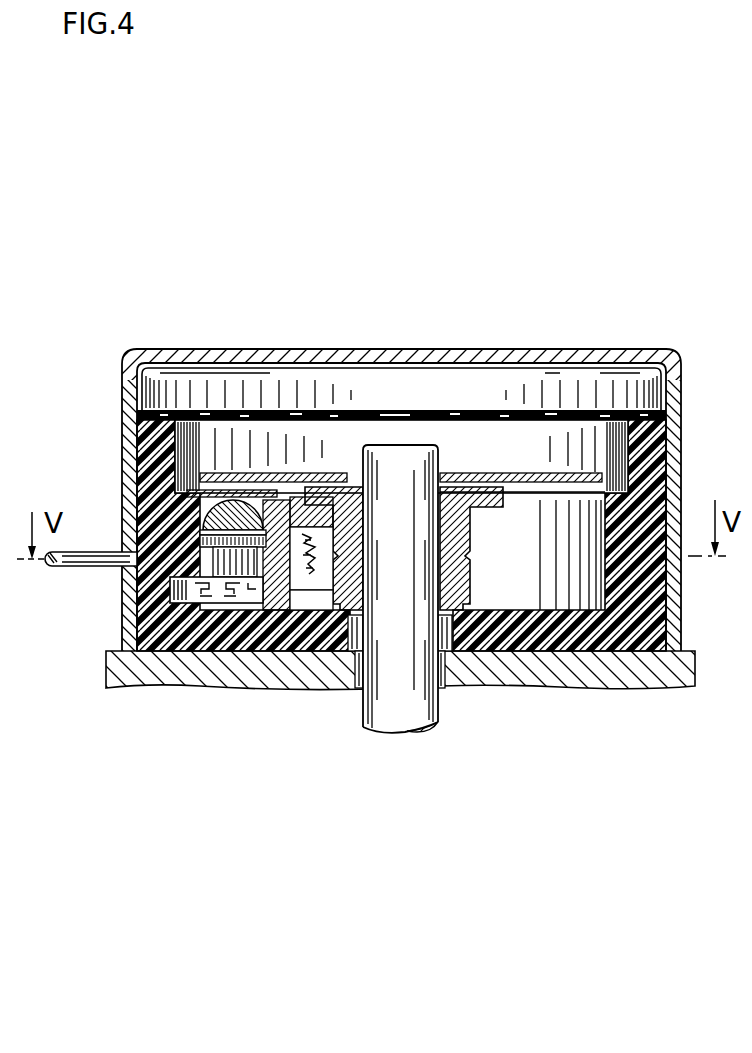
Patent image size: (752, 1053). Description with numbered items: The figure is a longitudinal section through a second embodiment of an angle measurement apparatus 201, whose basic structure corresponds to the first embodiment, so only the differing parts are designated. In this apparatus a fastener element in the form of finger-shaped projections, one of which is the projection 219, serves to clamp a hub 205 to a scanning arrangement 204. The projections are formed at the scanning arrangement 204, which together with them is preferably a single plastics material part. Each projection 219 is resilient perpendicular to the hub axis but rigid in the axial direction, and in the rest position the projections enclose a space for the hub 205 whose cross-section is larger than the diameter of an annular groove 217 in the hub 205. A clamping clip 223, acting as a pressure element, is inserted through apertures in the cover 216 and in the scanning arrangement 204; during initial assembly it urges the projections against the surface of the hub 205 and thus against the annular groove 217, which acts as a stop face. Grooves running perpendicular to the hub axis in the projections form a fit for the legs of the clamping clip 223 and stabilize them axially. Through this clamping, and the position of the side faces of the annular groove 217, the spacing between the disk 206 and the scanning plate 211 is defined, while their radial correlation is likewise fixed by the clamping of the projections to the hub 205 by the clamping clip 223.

The angle measurement apparatus 201 is at (432, 384).
The scanning arrangement 204 is at (610, 653).
The hub 205 is at (463, 602).
The disk 206 is at (137, 438).
The scanning plate 211 is at (228, 472).
The cover 216 is at (285, 358).
The annular groove 217 is at (468, 557).
The finger-shaped projection 219 is at (310, 578).
The clamping clip 223 is at (80, 566).